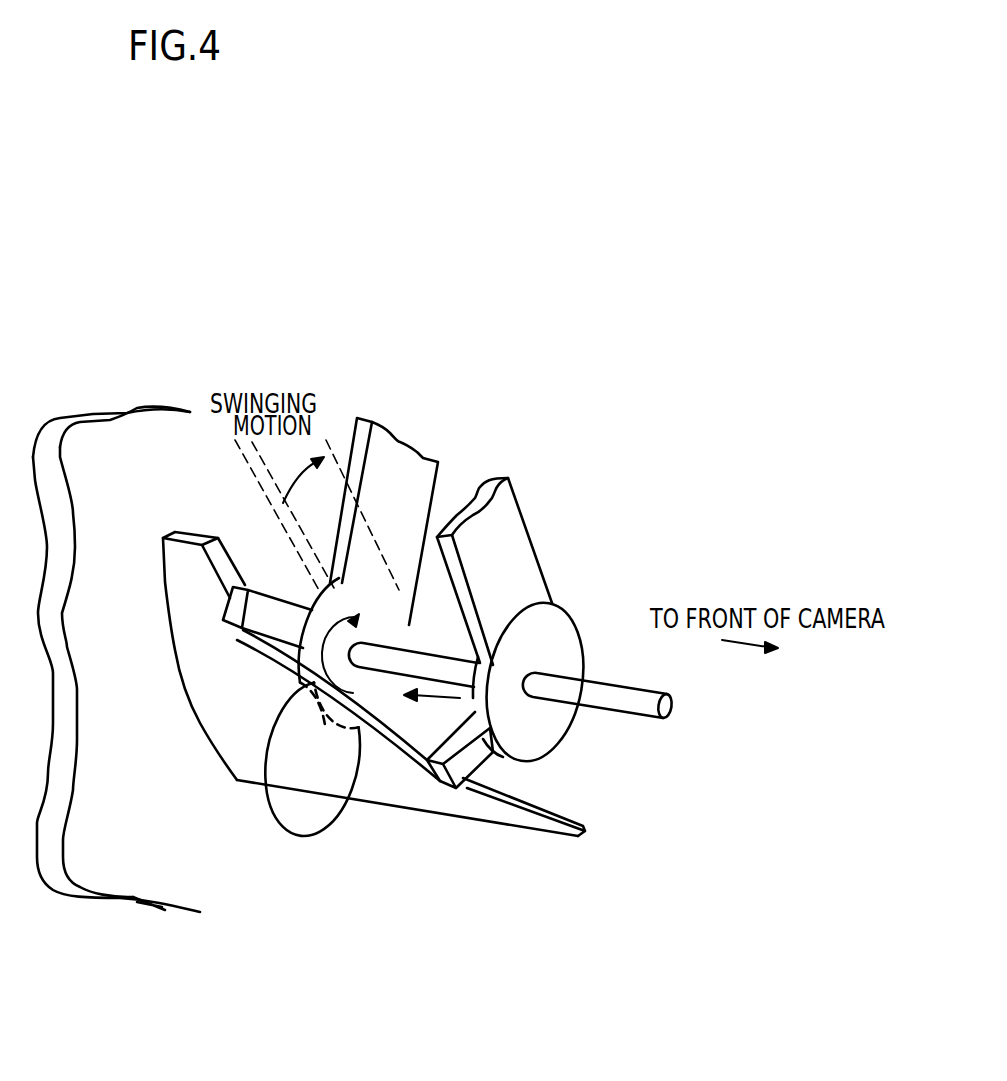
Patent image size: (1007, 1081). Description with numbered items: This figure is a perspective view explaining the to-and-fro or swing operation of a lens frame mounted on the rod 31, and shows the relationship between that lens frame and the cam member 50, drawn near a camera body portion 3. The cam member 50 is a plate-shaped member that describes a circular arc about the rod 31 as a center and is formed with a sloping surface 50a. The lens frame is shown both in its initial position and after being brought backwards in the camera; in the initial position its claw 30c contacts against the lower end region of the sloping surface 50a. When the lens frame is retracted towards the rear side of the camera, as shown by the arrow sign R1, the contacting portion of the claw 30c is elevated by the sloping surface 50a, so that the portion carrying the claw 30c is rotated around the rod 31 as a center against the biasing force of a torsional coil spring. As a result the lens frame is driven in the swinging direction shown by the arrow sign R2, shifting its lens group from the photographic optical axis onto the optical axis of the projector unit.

The camera body 3 is at (117, 445).
The claw 30c is at (253, 620).
The rod 31 is at (637, 703).
The cam member 50 is at (303, 772).
The sloping surface 50a is at (560, 835).
The arrow sign R1 is at (391, 672).
The arrow sign R2 is at (297, 475).